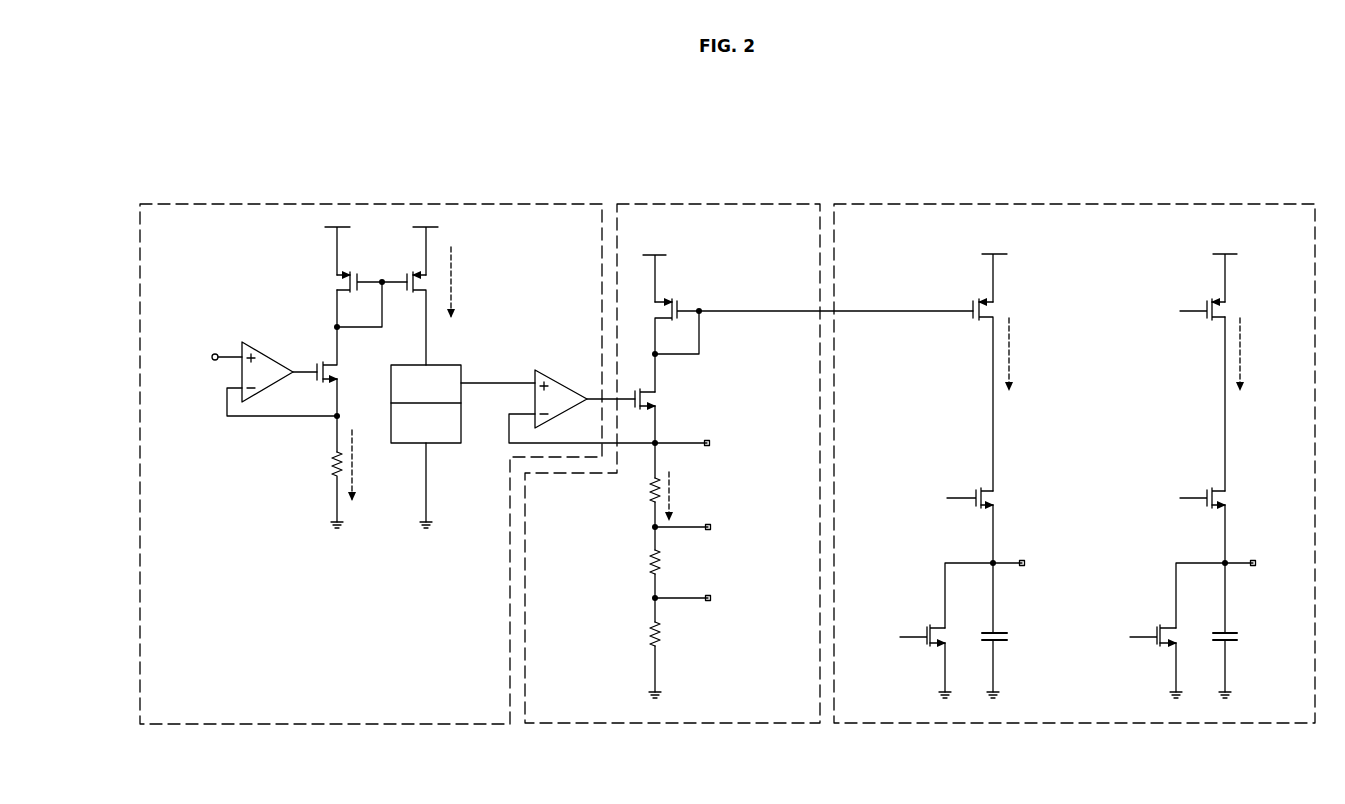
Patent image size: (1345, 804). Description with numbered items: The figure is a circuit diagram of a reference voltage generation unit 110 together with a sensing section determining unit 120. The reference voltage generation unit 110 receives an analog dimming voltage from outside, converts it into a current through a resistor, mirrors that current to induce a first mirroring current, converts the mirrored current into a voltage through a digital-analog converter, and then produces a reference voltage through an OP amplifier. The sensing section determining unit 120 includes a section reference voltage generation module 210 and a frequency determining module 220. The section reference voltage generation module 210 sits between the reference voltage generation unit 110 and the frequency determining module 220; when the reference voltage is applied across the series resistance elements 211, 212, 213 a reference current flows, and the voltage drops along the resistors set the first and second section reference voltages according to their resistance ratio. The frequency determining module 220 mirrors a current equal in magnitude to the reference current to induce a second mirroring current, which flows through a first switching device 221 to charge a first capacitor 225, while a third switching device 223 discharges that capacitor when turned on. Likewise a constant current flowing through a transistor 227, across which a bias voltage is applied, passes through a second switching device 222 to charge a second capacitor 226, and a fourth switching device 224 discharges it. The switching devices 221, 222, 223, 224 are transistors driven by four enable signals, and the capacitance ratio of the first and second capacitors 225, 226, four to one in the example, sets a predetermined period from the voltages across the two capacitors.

The reference voltage generation unit 110 is at (380, 203).
The sensing section determining unit 120 is at (1083, 147).
The section reference voltage generation module 210 is at (707, 203).
The frequency determining module 220 is at (1077, 203).
The resistance element 211 is at (616, 490).
The resistance element 212 is at (616, 561).
The resistance element 213 is at (616, 633).
The first switching device 221 is at (997, 501).
The second switching device 222 is at (1230, 500).
The third switching device 223 is at (932, 626).
The fourth switching device 224 is at (1162, 626).
The first capacitor 225 is at (1020, 626).
The second capacitor 226 is at (1250, 626).
The transistor 227 is at (1230, 313).